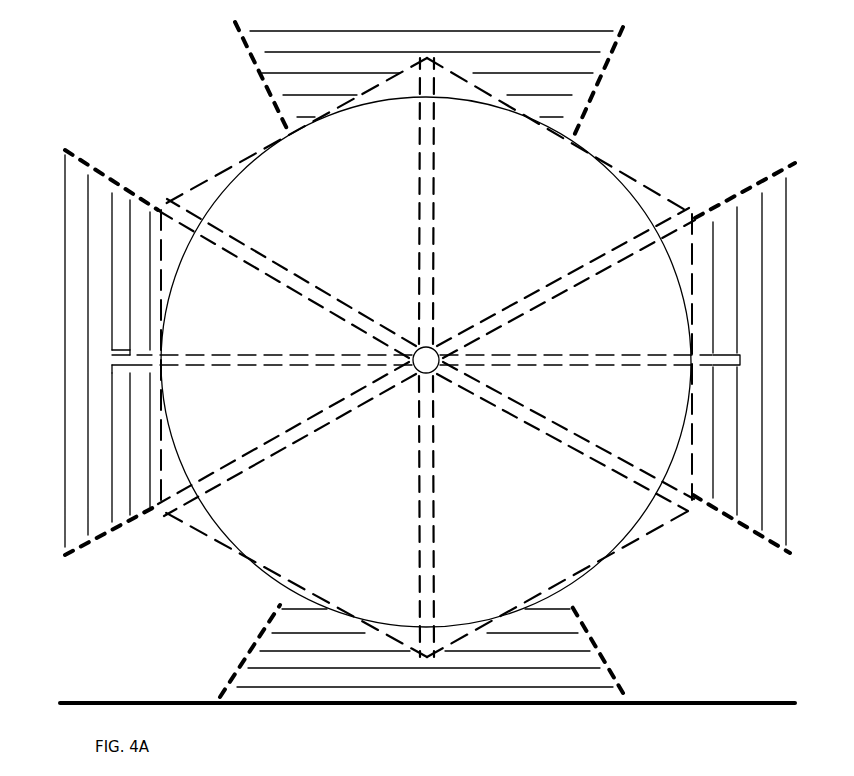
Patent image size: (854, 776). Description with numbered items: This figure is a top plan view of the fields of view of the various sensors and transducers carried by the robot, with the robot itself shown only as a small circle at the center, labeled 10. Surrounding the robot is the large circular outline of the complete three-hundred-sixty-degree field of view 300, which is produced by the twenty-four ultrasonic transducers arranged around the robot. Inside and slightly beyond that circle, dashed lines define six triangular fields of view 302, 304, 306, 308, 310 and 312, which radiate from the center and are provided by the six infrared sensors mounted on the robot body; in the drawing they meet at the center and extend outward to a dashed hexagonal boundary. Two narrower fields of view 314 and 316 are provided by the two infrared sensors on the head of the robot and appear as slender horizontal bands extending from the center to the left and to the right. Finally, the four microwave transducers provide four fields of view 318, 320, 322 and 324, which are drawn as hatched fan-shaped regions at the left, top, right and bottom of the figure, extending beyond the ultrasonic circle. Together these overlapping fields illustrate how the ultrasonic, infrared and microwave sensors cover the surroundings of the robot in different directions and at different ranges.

The central hub 10 is at (433, 347).
The 360° field of view 300 is at (625, 183).
The triangular field of view 302 is at (660, 190).
The triangular field of view 304 is at (688, 458).
The triangular field of view 306 is at (607, 560).
The triangular field of view 308 is at (240, 558).
The triangular field of view 310 is at (162, 435).
The triangular field of view 312 is at (298, 207).
The narrower field of view 314 is at (173, 352).
The narrower field of view 316 is at (570, 357).
The microwave field of view 318 is at (78, 155).
The microwave field of view 320 is at (613, 31).
The microwave field of view 322 is at (742, 533).
The microwave field of view 324 is at (614, 688).